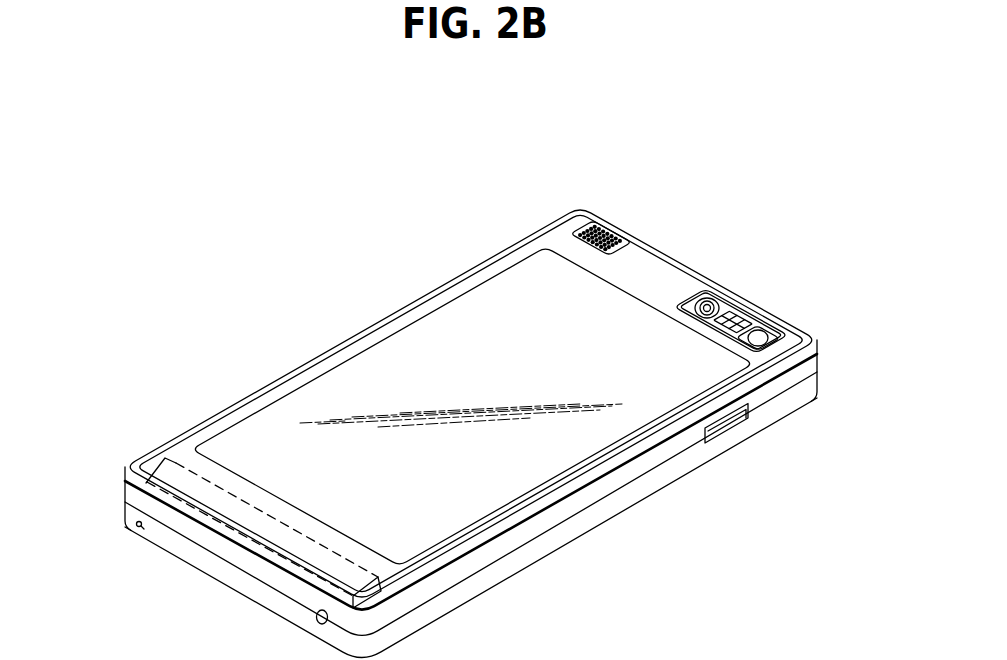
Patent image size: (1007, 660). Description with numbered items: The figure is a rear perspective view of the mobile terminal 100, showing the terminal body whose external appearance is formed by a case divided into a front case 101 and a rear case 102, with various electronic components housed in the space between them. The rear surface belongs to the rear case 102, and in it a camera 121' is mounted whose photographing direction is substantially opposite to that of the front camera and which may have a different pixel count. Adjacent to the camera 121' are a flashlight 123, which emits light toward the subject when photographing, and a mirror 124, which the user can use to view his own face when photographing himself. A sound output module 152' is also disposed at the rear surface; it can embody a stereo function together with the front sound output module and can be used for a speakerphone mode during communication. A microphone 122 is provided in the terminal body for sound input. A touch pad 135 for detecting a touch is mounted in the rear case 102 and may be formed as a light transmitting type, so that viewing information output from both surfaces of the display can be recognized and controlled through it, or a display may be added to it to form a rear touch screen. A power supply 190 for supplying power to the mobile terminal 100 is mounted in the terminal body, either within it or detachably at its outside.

The mobile terminal 100 is at (433, 266).
The front case 101 is at (810, 392).
The rear case 102 is at (810, 363).
The camera 121' is at (733, 288).
The microphone 122 is at (137, 526).
The flashlight 123 is at (740, 317).
The mirror 124 is at (760, 338).
The touch pad 135 is at (368, 363).
The sound output module 152' is at (631, 203).
The power supply 190 is at (163, 460).